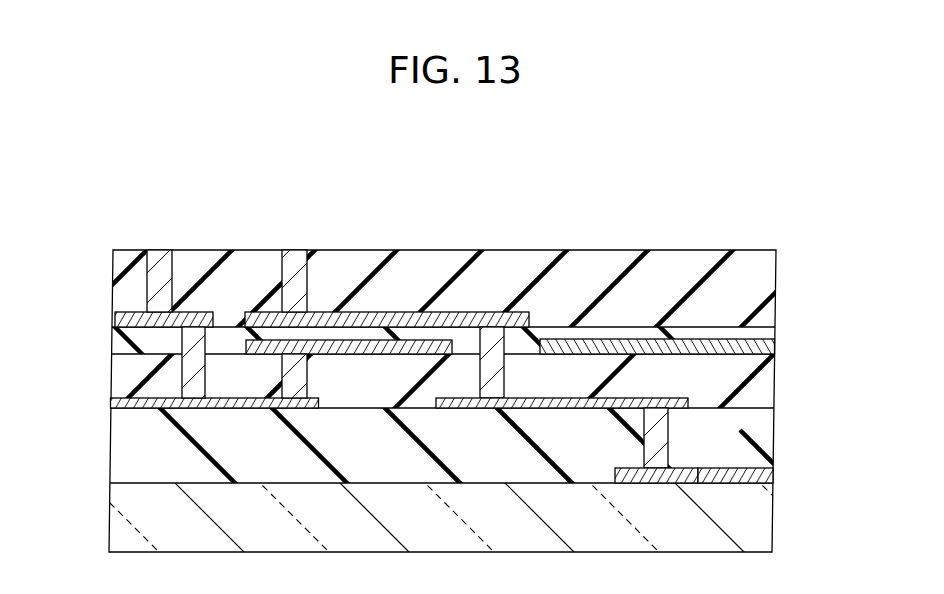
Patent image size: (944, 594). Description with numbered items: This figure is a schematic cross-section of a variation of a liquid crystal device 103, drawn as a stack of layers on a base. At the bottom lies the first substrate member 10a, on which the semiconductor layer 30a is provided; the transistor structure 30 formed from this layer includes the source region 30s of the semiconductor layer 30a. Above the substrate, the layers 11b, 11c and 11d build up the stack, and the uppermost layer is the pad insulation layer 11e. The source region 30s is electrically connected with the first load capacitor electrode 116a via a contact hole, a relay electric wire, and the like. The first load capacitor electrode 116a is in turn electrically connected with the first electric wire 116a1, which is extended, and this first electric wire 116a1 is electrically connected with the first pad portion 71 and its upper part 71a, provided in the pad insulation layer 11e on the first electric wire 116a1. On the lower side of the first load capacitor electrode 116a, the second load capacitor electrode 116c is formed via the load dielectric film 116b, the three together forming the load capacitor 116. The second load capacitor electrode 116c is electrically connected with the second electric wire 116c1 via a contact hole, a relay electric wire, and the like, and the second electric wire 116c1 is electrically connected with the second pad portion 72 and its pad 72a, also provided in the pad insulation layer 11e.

The liquid crystal device 103 is at (769, 145).
The first substrate member 10a is at (762, 517).
The insulating layer 11b is at (773, 434).
The insulating layer 11c is at (765, 381).
The insulating layer 11d is at (770, 337).
The pad insulation layer 11e is at (770, 272).
The electrode 30 is at (714, 459).
The source region 30s is at (628, 483).
The semiconductor layer 30a is at (713, 483).
The first pad portion 71 is at (300, 250).
The via conductor portion 71a is at (294, 281).
The second pad portion 72 is at (157, 250).
The wiring pad 72a is at (164, 319).
The wiring 116 is at (498, 183).
The first load capacitor electrode 116a is at (478, 322).
The first electric wire 116a1 is at (259, 322).
The load dielectric film 116b is at (413, 340).
The second load capacitor electrode 116c is at (348, 312).
The second electric wire 116c1 is at (198, 312).